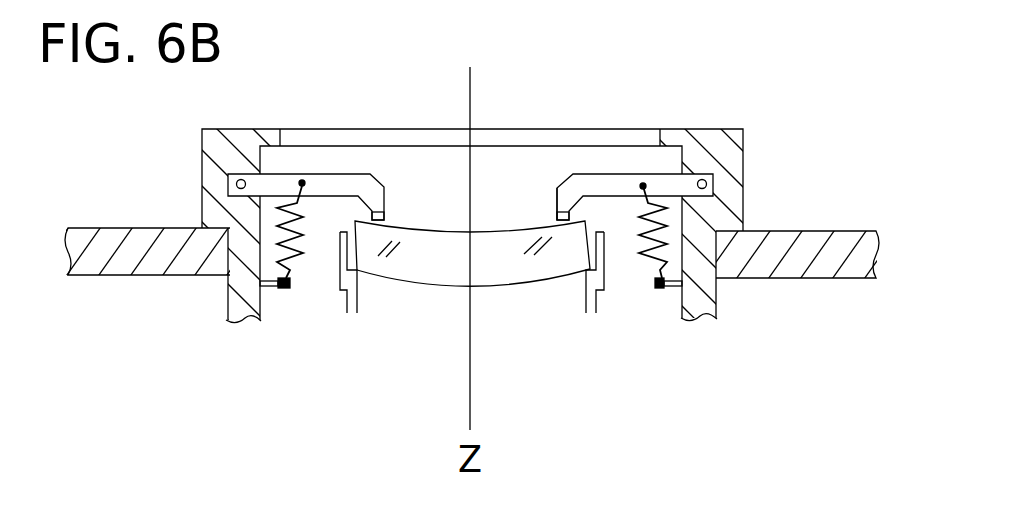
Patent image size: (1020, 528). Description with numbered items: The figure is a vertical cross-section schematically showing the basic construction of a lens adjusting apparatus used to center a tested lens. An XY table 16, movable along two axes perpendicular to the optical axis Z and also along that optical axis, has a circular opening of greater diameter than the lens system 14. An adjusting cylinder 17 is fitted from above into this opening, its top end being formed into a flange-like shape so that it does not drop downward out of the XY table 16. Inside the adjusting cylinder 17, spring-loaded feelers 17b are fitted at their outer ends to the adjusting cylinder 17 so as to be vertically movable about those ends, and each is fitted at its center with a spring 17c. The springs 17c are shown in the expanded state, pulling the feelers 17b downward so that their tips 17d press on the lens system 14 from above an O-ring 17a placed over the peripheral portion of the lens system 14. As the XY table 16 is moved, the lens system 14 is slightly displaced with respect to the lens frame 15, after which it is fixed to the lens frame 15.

The lens system 14 is at (507, 272).
The lens frame 15 is at (362, 278).
The XY table 16 is at (115, 263).
The adjusting cylinder 17 is at (204, 150).
The O-ring 17a is at (560, 217).
The feeler 17b is at (603, 185).
The spring 17c is at (647, 257).
The tip 17d is at (557, 205).